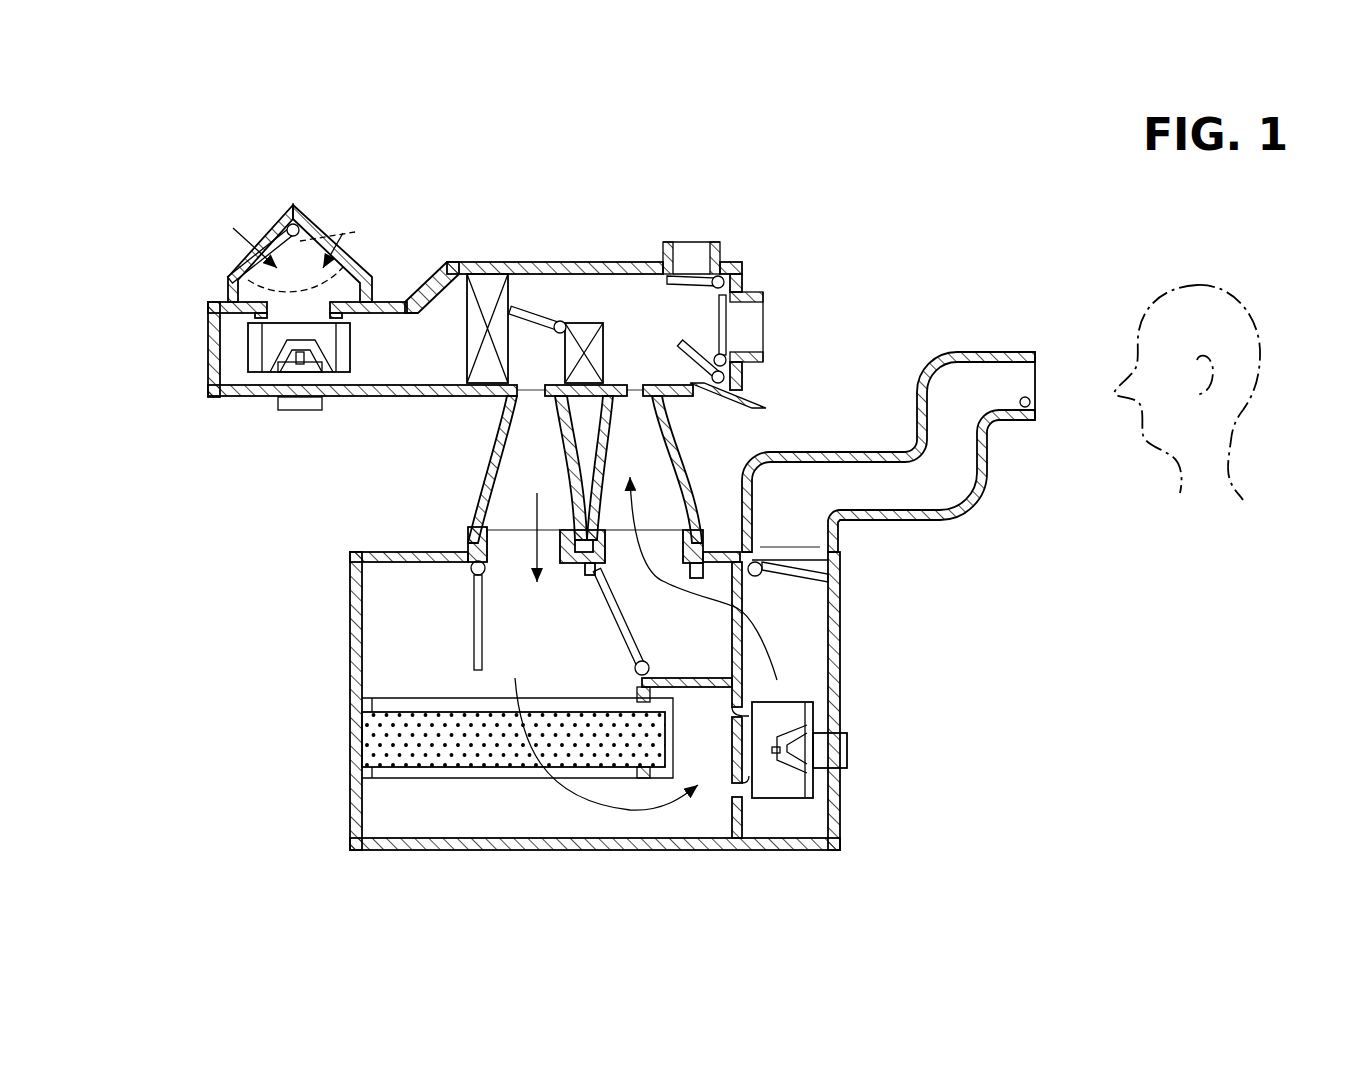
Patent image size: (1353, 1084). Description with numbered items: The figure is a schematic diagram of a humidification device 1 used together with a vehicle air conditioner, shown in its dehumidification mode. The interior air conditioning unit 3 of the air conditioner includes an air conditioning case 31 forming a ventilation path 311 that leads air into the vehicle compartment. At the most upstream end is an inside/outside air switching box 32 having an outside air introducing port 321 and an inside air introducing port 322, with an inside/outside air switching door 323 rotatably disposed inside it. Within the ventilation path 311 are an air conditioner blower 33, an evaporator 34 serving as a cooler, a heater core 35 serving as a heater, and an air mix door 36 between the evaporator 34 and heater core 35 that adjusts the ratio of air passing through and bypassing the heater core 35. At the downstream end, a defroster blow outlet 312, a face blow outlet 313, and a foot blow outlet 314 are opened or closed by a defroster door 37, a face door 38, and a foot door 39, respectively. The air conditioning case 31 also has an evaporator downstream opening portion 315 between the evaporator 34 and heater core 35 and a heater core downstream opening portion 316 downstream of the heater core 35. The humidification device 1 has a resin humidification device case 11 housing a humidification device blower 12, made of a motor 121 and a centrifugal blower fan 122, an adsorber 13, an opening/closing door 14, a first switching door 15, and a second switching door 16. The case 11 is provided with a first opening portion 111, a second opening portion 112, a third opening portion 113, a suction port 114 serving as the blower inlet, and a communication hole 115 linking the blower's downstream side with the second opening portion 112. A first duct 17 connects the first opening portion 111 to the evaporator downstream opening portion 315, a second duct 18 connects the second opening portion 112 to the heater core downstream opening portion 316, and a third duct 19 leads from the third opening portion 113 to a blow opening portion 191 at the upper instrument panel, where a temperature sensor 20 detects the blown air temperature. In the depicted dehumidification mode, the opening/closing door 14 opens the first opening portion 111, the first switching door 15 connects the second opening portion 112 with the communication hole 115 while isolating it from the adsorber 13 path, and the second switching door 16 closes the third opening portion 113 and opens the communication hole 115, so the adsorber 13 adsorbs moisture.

The humidification device 1 is at (587, 679).
The interior air conditioning unit 3 is at (491, 265).
The humidification device case 11 is at (350, 660).
The first opening portion 111 is at (517, 538).
The second opening portion 112 is at (655, 543).
The third opening portion 113 is at (803, 545).
The suction port 114 is at (733, 775).
The communication hole 115 is at (737, 607).
The humidification device blower 12 is at (821, 809).
The motor 121 is at (835, 752).
The centrifugal blower fan 122 is at (783, 797).
The adsorber 13 is at (362, 735).
The opening/closing door 14 is at (477, 610).
The first switching door 15 is at (697, 577).
The second switching door 16 is at (807, 583).
The first duct 17 is at (493, 445).
The second duct 18 is at (673, 430).
The third duct 19 is at (918, 420).
The blow opening portion 191 is at (1035, 380).
The temperature sensor 20 is at (1030, 402).
The air conditioning case 31 is at (208, 345).
The ventilation path 311 is at (435, 312).
The defroster blow outlet 312 is at (695, 247).
The face blow outlet 313 is at (753, 313).
The foot blow outlet 314 is at (752, 410).
The evaporator downstream opening portion 315 is at (513, 412).
The heater core downstream opening portion 316 is at (633, 393).
The inside/outside air switching box 32 is at (287, 224).
The outside air introducing port 321 is at (323, 233).
The inside air introducing port 322 is at (270, 237).
The inside/outside air switching door 323 is at (230, 283).
The air conditioner blower 33 is at (255, 370).
The evaporator 34 is at (485, 285).
The heater core 35 is at (583, 327).
The air mix door 36 is at (537, 313).
The defroster door 37 is at (690, 280).
The face door 38 is at (737, 330).
The foot door 39 is at (742, 390).